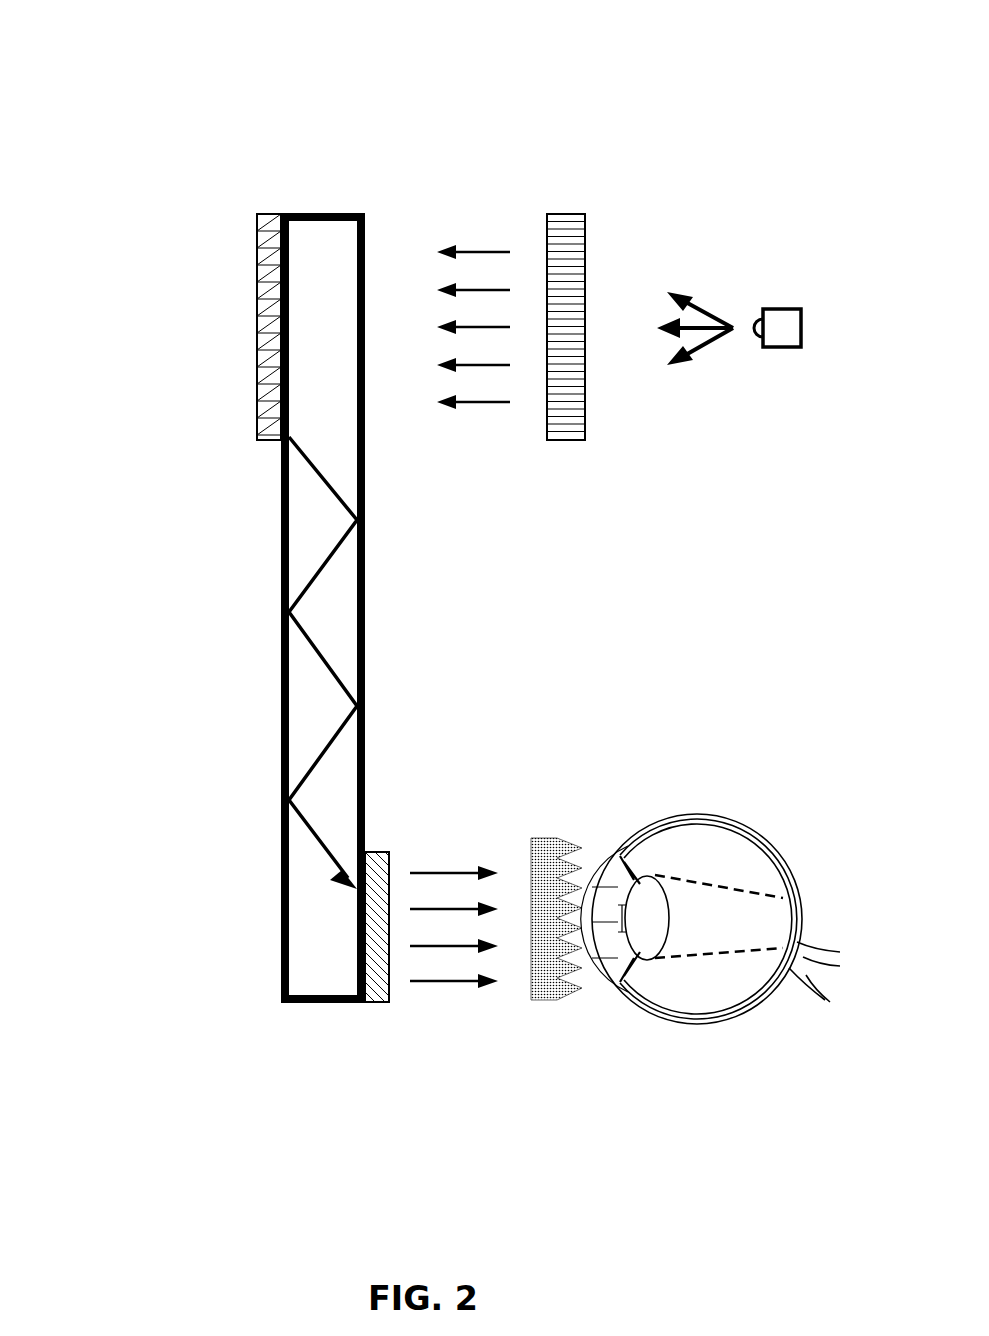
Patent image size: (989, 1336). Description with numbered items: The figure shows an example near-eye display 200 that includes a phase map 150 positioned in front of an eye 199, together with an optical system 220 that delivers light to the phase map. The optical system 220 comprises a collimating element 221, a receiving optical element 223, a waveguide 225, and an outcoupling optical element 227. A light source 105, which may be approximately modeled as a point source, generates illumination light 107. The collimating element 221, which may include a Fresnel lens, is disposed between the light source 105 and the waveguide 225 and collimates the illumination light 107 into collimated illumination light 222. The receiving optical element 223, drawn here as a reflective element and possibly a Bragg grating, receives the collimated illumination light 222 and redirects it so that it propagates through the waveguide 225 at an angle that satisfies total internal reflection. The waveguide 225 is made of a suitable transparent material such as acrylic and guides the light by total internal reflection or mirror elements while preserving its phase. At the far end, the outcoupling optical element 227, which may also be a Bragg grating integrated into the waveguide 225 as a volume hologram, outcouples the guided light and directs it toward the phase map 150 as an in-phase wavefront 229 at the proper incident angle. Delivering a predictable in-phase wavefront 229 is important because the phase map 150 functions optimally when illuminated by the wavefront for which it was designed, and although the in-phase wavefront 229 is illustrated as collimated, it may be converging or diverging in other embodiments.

The near-eye display 200 is at (62, 34).
The optical system 220 is at (184, 167).
The receiving optical element 223 is at (257, 268).
The waveguide 225 is at (365, 632).
The outcoupling optical element 227 is at (372, 1005).
The collimated illumination light 222 is at (515, 225).
The collimating element 221 is at (570, 215).
The light source 105 is at (778, 308).
The illumination light 107 is at (716, 365).
The in-phase wavefront 229 is at (512, 1023).
The phase map 150 is at (540, 838).
The eye 199 is at (768, 807).